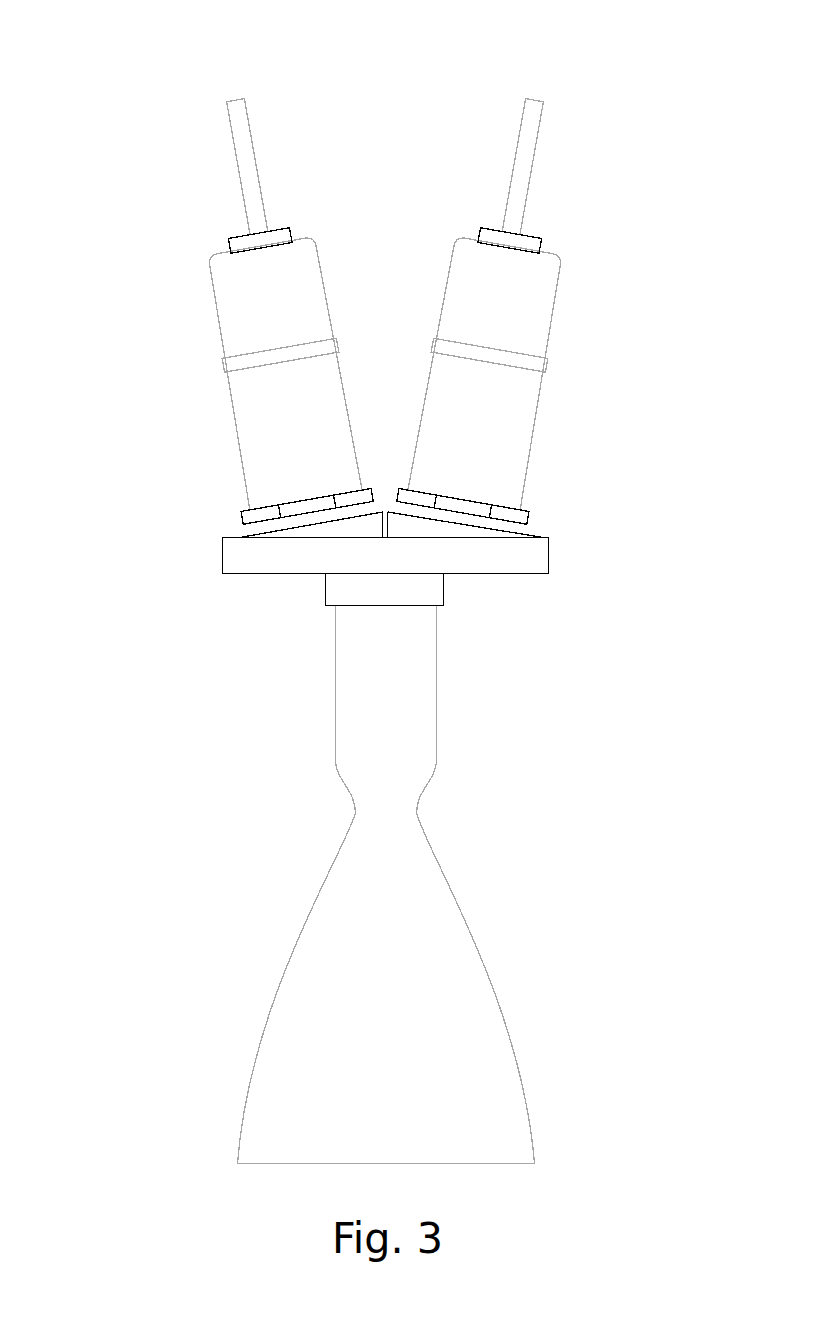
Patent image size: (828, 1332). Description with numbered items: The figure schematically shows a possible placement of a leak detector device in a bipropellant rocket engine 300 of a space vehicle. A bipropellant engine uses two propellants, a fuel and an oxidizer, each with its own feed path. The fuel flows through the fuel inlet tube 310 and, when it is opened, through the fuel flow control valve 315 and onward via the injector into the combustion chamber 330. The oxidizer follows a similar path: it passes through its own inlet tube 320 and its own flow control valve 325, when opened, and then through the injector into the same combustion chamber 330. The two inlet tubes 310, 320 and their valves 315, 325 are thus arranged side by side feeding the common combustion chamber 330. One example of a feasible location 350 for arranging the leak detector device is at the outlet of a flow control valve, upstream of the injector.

The bipropellant rocket engine 300 is at (350, 143).
The inlet tube 310 is at (233, 172).
The flow control valve 315 is at (222, 408).
The inlet tube 320 is at (535, 173).
The flow control valve 325 is at (543, 403).
The combustion chamber 330 is at (367, 718).
The feasible location 350 is at (460, 522).